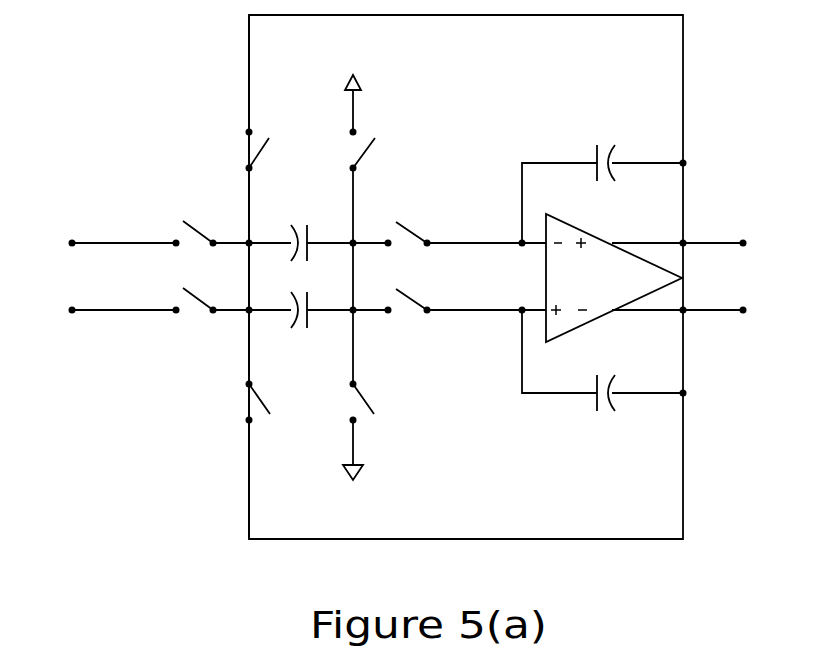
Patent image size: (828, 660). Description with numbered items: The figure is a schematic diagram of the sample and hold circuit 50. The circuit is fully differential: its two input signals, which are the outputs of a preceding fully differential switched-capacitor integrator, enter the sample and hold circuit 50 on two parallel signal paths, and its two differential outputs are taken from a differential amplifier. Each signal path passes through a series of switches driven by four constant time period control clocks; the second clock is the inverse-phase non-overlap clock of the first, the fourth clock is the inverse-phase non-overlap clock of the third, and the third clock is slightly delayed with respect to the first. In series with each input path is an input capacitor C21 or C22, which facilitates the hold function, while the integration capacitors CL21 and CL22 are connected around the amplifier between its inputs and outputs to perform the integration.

The sample and hold circuit 50 is at (175, 101).
The input capacitor C21 is at (297, 225).
The input capacitor C22 is at (297, 328).
The integration capacitor CL21 is at (613, 146).
The integration capacitor CL22 is at (613, 415).